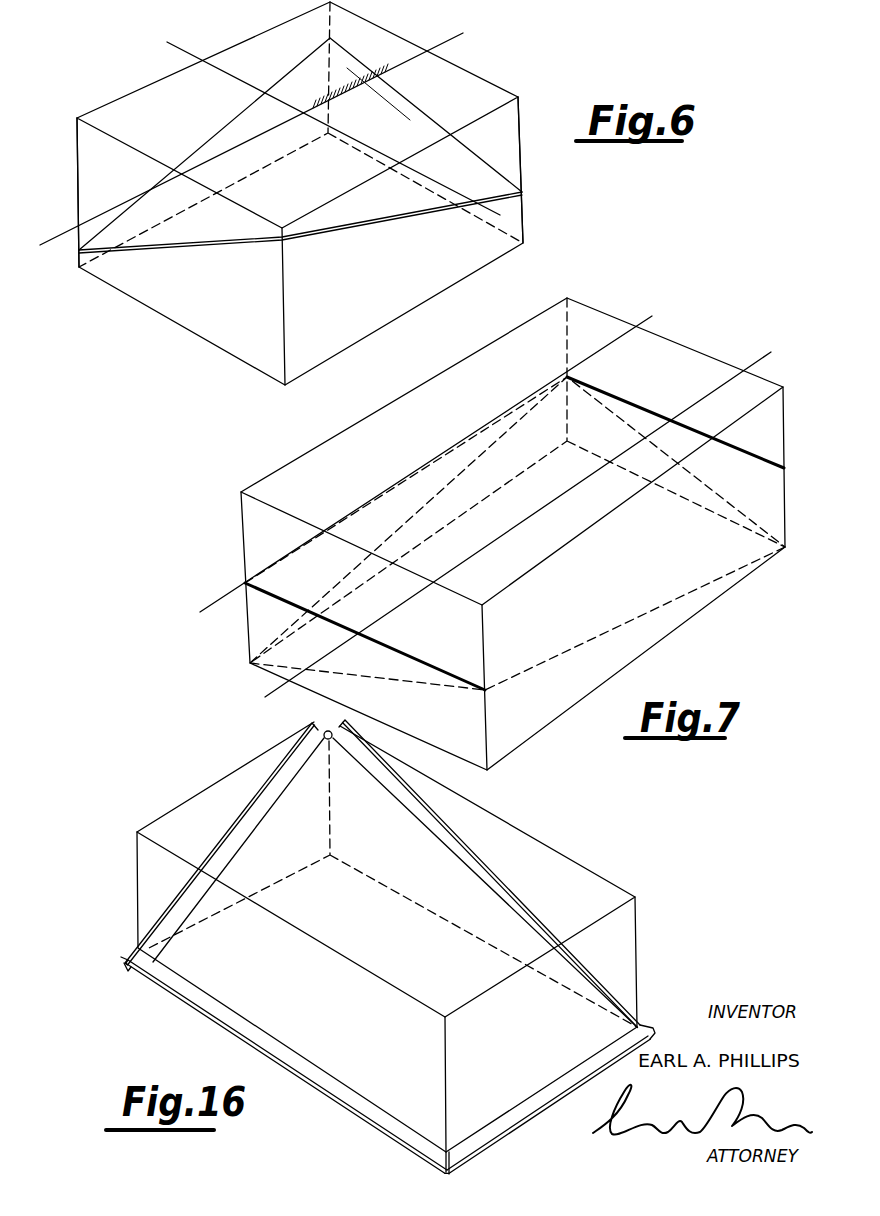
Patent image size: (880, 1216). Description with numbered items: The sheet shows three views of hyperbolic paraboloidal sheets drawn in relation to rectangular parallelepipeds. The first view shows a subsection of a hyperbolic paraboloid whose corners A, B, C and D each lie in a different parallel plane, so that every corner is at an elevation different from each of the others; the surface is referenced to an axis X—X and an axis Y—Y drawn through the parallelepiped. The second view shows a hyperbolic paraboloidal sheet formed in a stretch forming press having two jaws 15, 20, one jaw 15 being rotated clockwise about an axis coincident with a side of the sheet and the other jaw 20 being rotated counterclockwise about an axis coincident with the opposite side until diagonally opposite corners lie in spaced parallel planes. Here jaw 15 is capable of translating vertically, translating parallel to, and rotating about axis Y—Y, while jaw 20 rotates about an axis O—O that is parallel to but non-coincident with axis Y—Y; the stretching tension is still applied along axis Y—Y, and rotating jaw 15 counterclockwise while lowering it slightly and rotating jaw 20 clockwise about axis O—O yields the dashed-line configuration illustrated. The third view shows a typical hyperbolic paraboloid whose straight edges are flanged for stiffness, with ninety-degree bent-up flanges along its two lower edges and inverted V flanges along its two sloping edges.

In FIG. 7, the jaw 15 is at (404, 654).
In FIG. 7, the jaw 20 is at (664, 414).
In FIG. 6, the point A is at (300, 226).
In FIG. 6, the point B is at (300, 135).
In FIG. 6, the point C is at (529, 170).
In FIG. 6, the point D is at (70, 192).
In FIG. 6, the axis X- X is at (334, 131).
In FIG. 6, the axis Y— Y is at (248, 140).
In FIG. 7, the axis Y— Y is at (514, 525).
In FIG. 7, the axis O— O is at (427, 459).